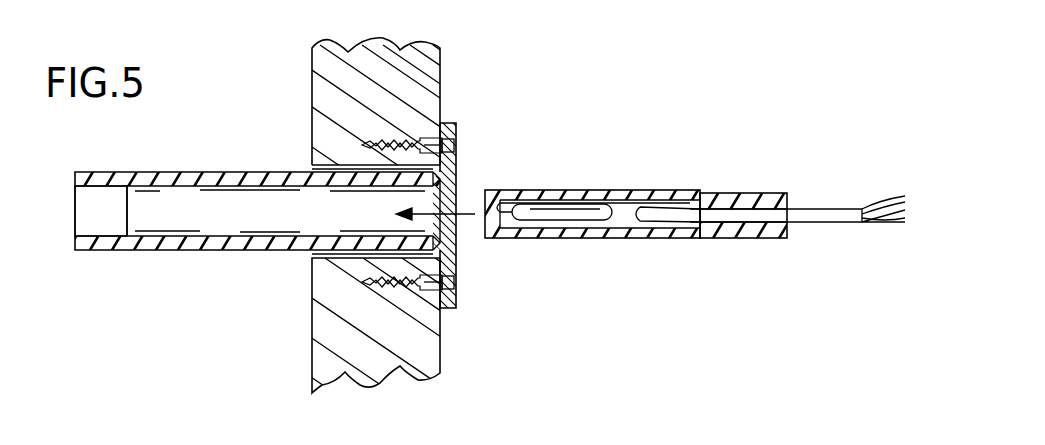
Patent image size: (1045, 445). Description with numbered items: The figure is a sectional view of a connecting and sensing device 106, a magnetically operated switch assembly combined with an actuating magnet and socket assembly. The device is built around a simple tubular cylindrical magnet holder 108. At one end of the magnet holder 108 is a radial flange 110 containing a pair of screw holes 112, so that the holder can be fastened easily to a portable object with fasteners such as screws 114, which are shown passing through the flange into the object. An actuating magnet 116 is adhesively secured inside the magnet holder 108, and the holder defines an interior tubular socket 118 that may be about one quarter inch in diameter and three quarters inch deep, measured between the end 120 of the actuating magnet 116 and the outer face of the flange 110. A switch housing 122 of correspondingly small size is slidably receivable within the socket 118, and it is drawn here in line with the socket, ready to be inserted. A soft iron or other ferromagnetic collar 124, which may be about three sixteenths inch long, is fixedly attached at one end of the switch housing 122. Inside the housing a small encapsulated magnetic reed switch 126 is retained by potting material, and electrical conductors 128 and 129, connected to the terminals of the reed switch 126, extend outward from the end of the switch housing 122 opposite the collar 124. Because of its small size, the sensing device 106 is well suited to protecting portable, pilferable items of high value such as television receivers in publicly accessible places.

The connecting and sensing device 106 is at (478, 129).
The magnet holder 108 is at (186, 172).
The radial flange 110 is at (455, 127).
The screw holes 112 is at (456, 158).
The screws 114 is at (458, 138).
The actuating magnet 116 is at (97, 232).
The interior tubular socket 118 is at (265, 222).
The end of the actuating magnet 120 is at (147, 232).
The switch housing 122 is at (658, 240).
The ferromagnetic collar 124 is at (505, 240).
The magnetic reed switch 126 is at (615, 222).
The electrical conductor 128 is at (633, 204).
The electrical conductor 129 is at (663, 220).